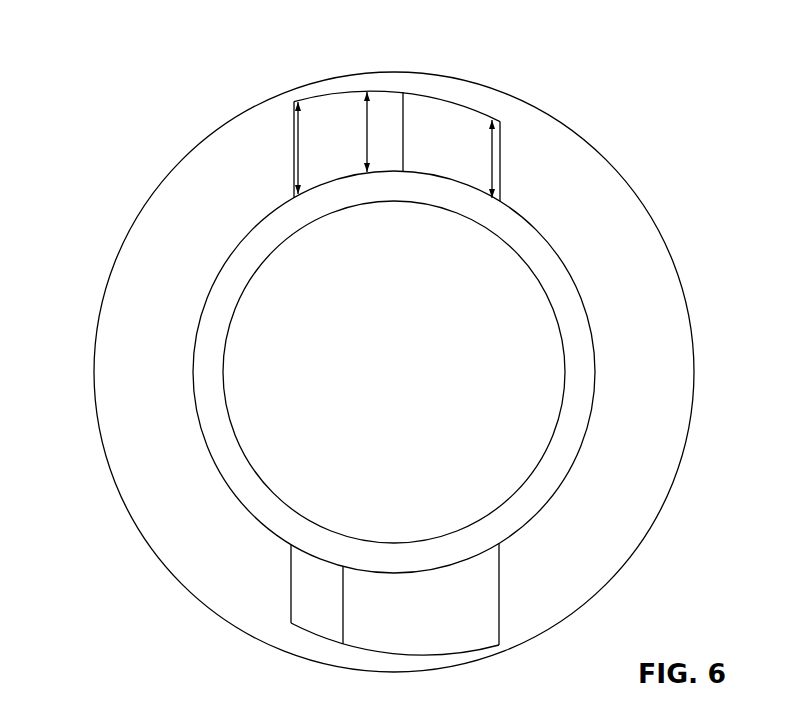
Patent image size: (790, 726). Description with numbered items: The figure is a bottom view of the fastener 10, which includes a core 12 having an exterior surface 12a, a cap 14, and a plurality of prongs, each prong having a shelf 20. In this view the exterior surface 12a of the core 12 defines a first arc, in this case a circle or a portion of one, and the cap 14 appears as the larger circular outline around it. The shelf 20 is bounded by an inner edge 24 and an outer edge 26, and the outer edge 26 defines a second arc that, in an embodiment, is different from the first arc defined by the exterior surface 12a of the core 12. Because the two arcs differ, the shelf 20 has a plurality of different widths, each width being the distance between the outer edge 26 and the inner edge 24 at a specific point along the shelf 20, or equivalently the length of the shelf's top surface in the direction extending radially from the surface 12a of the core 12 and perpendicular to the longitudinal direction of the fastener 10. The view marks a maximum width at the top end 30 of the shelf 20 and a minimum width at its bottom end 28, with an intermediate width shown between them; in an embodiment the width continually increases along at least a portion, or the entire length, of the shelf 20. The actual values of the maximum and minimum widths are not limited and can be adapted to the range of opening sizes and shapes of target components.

The fastener 10 is at (163, 84).
The core 12 is at (240, 267).
The exterior surface 12a is at (208, 302).
The cap 14 is at (222, 212).
The shelf 20 is at (470, 155).
The inner edge 24 is at (403, 92).
The outer edge 26 is at (437, 99).
The bottom end 28 is at (502, 145).
The top end 30 is at (292, 148).